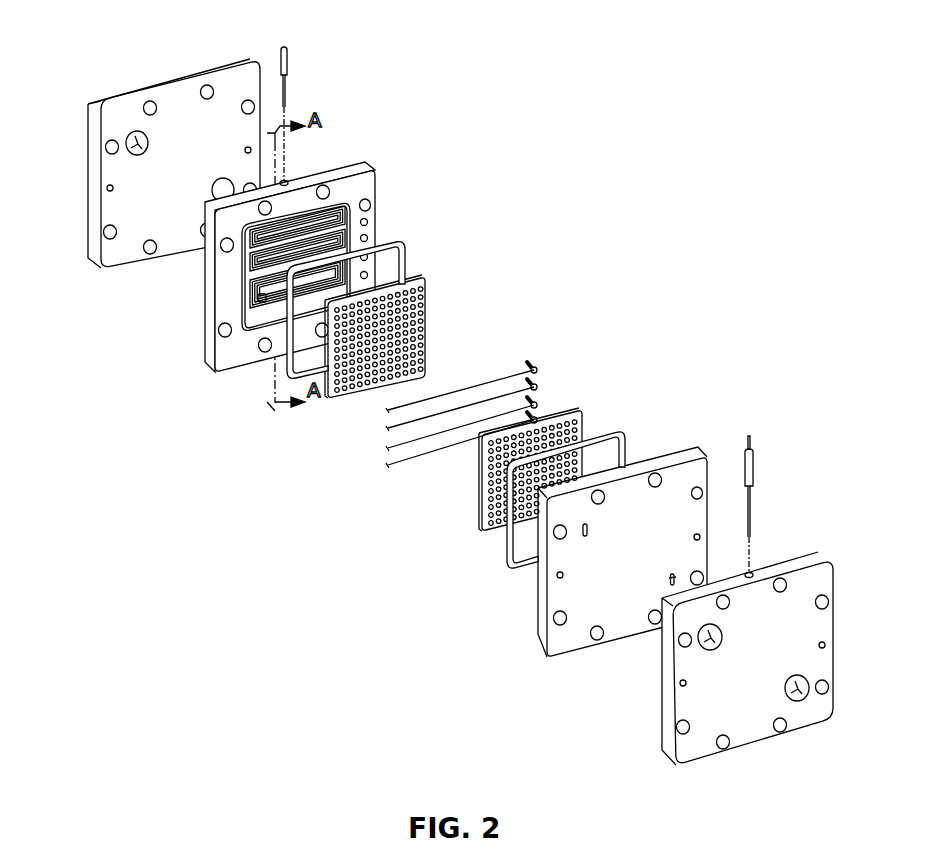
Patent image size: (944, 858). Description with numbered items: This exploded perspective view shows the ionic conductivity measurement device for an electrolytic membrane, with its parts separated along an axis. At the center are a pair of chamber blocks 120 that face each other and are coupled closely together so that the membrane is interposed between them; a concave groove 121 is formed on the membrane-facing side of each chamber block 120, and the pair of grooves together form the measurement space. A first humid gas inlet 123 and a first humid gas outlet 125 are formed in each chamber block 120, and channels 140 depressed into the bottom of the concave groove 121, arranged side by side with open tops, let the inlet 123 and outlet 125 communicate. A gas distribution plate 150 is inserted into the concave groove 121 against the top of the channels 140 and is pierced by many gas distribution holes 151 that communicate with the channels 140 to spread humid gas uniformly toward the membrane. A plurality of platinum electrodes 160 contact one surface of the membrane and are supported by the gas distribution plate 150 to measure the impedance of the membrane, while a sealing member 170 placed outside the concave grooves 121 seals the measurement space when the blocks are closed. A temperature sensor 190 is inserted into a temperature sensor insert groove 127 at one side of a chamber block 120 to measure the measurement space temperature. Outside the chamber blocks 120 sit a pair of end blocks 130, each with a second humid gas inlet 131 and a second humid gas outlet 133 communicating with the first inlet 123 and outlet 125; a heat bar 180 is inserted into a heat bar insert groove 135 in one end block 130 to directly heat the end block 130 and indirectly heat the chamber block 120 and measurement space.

The chamber block 120 is at (577, 642).
The concave groove 121 is at (260, 346).
The first humid gas inlet 123 is at (225, 251).
The first humid gas outlet 125 is at (667, 582).
The temperature sensor insert groove 127 is at (286, 180).
The end block 130 is at (170, 82).
The second humid gas inlet 131 is at (137, 128).
The second humid gas outlet 133 is at (226, 185).
The heat bar insert groove 135 is at (750, 568).
The channel 140 is at (253, 312).
The gas distribution plate 150 is at (425, 280).
The gas distribution hole 151 is at (422, 307).
The electrode 160 is at (502, 375).
The sealing member 170 is at (407, 245).
The heat bar 180 is at (753, 465).
The temperature sensor 190 is at (287, 63).